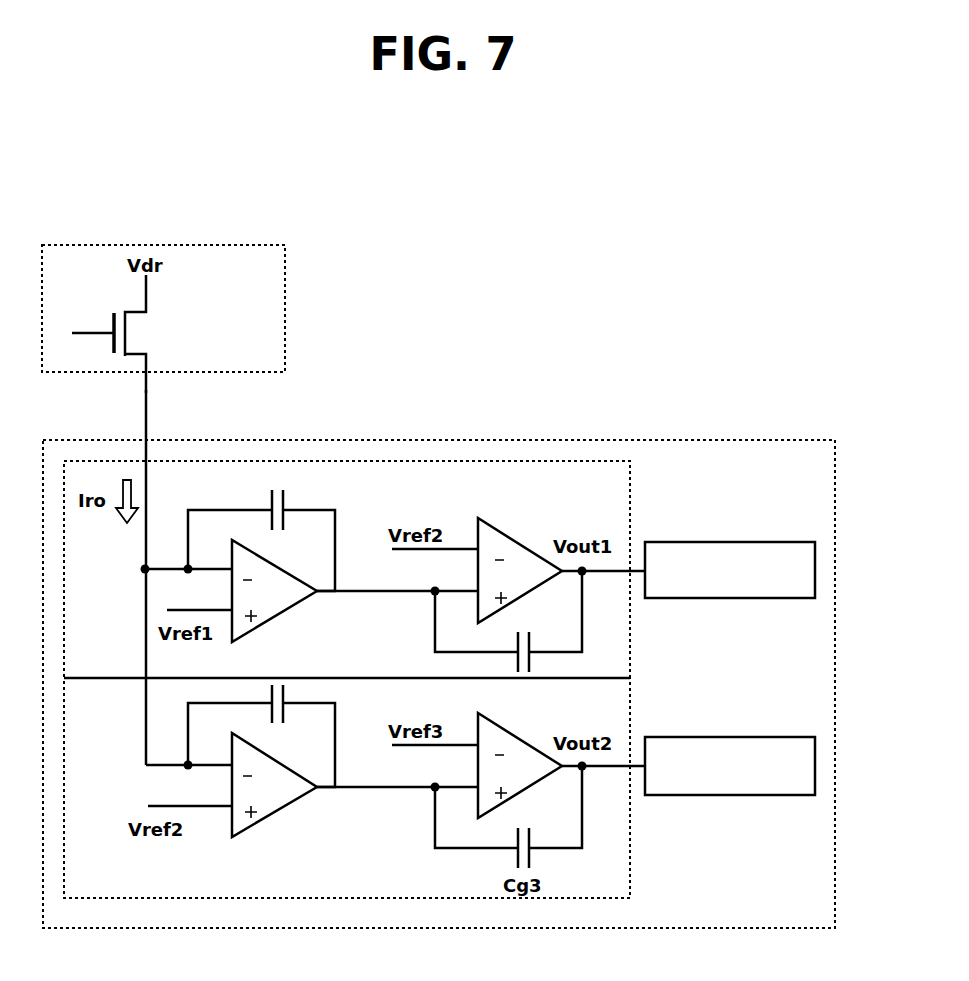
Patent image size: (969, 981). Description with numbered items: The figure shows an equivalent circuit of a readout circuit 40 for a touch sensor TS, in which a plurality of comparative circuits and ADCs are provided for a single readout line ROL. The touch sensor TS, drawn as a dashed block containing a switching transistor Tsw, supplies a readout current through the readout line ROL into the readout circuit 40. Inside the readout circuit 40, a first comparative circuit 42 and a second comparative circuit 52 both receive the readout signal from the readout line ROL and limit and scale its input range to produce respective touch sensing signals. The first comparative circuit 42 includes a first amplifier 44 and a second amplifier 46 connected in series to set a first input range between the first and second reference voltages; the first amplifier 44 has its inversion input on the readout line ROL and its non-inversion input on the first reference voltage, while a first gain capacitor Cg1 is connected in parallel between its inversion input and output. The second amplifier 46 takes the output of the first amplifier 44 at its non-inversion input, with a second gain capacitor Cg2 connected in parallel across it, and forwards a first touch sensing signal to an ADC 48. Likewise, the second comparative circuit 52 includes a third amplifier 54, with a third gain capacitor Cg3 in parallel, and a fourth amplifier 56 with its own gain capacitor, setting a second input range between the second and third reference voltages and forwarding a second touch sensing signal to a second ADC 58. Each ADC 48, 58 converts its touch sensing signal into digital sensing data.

The readout circuit 40 is at (508, 440).
The first comparative circuit 42 is at (632, 522).
The first amplifier 44 is at (275, 618).
The second amplifier 46 is at (520, 540).
The ADC 48 is at (730, 542).
The second comparative circuit 52 is at (632, 715).
The third amplifier 54 is at (275, 813).
The fourth amplifier 56 is at (520, 735).
The second ADC 58 is at (730, 737).
The touch sensor TS is at (285, 308).
The switching transistor Tsw is at (129, 334).
The readout line ROL is at (146, 393).
The first gain capacitor Cg1 is at (261, 529).
The second gain capacitor Cg2 is at (508, 621).
The third gain capacitor Cg3 is at (261, 736).